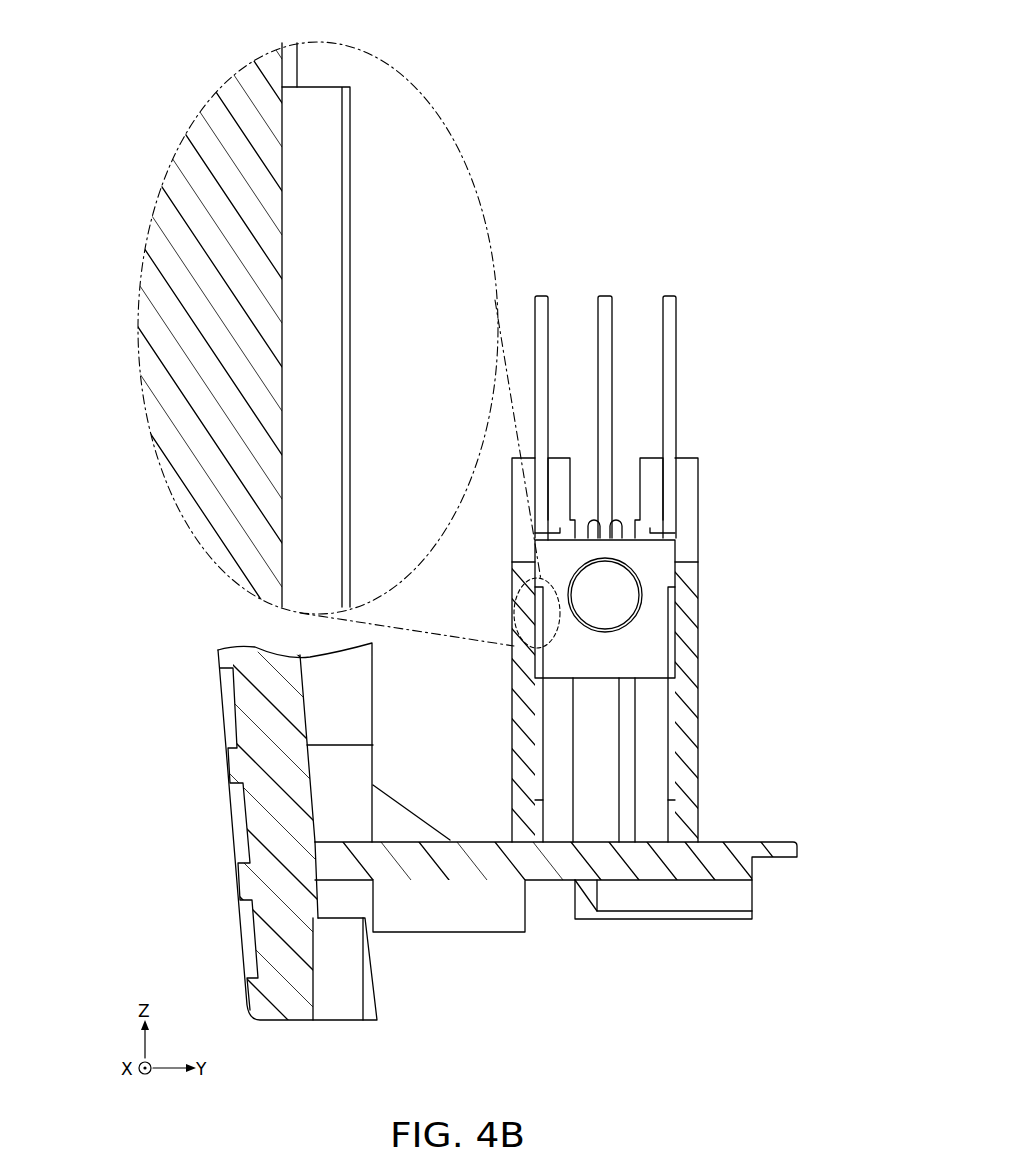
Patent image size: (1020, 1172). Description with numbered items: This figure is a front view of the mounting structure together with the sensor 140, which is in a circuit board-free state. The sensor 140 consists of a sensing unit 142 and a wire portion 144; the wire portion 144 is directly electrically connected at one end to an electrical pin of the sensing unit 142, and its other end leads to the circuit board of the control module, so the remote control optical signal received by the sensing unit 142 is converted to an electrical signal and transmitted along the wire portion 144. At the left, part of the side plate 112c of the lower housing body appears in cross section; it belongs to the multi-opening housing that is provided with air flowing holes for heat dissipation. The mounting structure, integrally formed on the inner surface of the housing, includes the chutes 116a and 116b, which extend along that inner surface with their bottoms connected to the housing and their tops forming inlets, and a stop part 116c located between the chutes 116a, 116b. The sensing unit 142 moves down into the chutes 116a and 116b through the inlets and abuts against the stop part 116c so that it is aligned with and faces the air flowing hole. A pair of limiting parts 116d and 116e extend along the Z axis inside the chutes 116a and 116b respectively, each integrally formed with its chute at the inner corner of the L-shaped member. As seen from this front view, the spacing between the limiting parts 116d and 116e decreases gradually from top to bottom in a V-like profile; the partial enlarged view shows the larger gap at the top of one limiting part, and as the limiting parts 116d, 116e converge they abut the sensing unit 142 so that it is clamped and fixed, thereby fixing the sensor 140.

The sensor 140 is at (552, 25).
The sensing unit 142 is at (725, 545).
The wire portion 144 is at (720, 389).
The side plate 112c is at (228, 763).
The chute 116a is at (688, 683).
The chute 116b is at (512, 690).
The stop part 116c is at (628, 815).
The limiting part 116d is at (540, 765).
The limiting part 116e is at (673, 752).